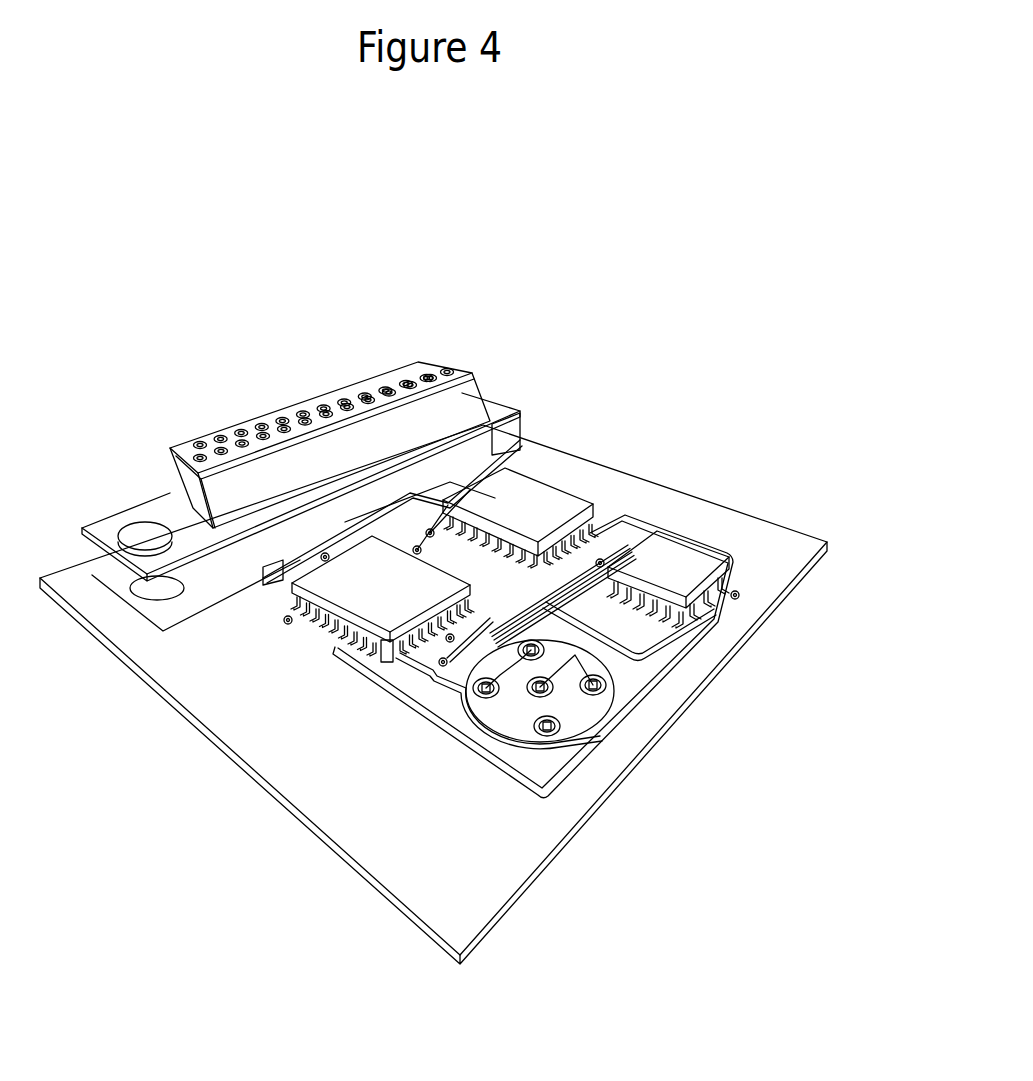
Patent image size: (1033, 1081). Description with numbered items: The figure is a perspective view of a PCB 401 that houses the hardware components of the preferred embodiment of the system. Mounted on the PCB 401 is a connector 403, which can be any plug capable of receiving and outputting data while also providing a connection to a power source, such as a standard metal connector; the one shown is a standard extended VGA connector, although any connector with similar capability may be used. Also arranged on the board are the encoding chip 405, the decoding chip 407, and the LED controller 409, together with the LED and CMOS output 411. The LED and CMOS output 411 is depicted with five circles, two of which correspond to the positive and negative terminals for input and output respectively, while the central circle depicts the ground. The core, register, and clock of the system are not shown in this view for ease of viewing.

The PCB 401 is at (660, 398).
The connector 403 is at (230, 425).
The encoding chip 405 is at (343, 612).
The decoding chip 407 is at (535, 478).
The LED controller 409 is at (713, 587).
The LED and CMOS output 411 is at (560, 740).